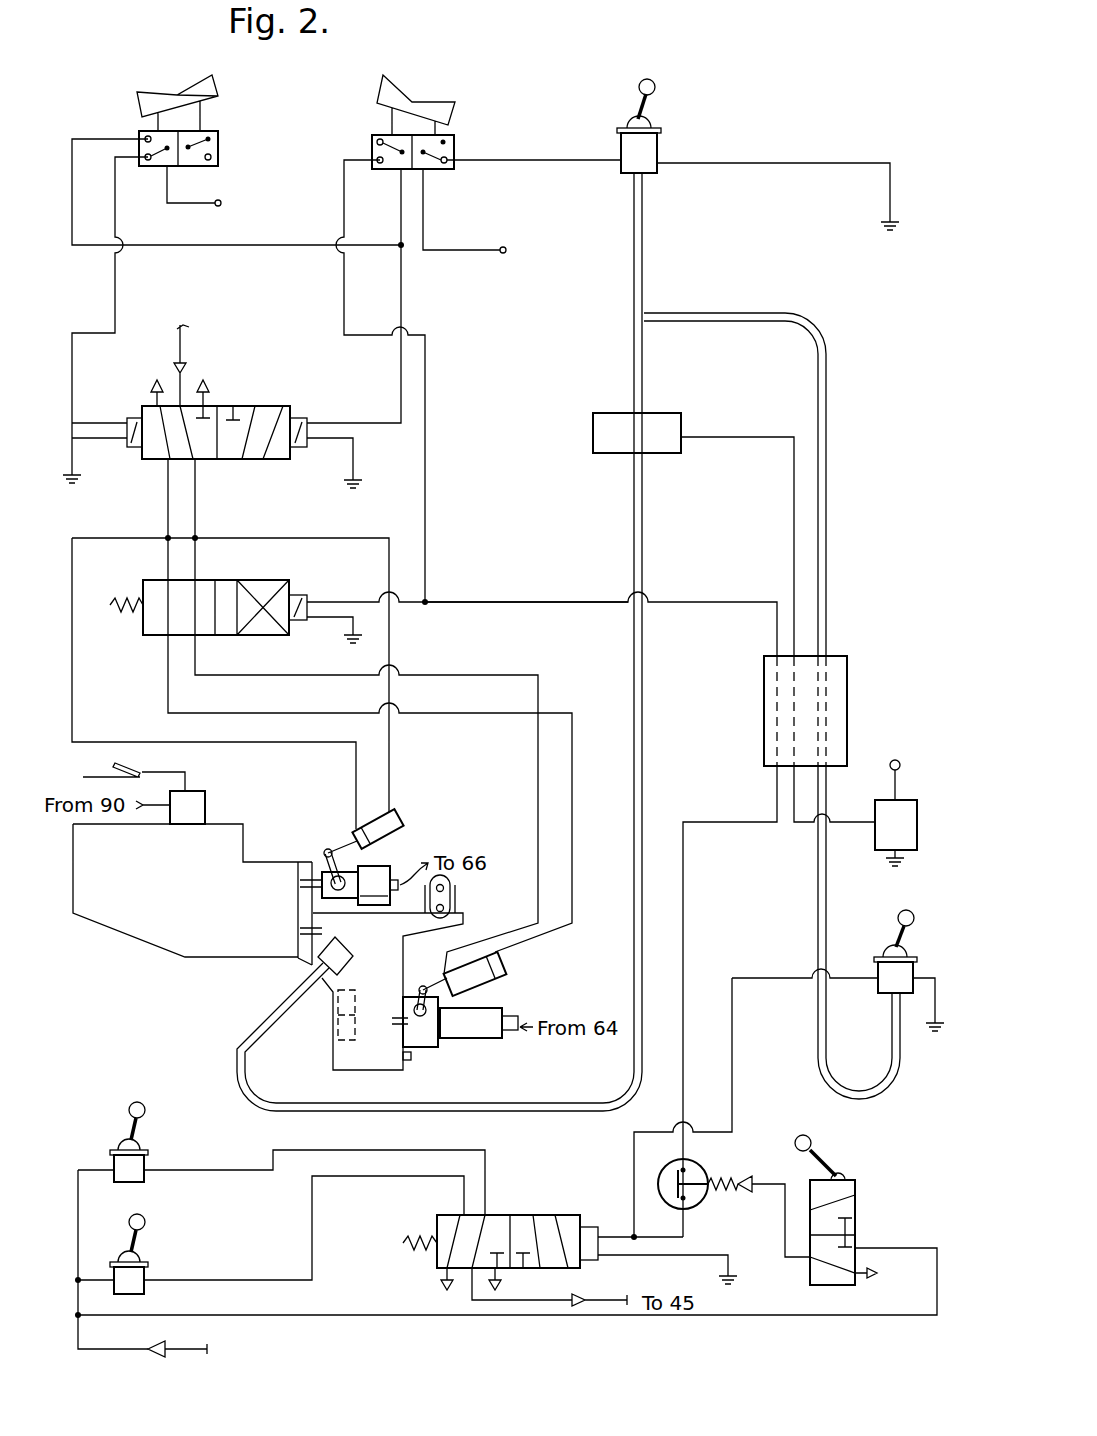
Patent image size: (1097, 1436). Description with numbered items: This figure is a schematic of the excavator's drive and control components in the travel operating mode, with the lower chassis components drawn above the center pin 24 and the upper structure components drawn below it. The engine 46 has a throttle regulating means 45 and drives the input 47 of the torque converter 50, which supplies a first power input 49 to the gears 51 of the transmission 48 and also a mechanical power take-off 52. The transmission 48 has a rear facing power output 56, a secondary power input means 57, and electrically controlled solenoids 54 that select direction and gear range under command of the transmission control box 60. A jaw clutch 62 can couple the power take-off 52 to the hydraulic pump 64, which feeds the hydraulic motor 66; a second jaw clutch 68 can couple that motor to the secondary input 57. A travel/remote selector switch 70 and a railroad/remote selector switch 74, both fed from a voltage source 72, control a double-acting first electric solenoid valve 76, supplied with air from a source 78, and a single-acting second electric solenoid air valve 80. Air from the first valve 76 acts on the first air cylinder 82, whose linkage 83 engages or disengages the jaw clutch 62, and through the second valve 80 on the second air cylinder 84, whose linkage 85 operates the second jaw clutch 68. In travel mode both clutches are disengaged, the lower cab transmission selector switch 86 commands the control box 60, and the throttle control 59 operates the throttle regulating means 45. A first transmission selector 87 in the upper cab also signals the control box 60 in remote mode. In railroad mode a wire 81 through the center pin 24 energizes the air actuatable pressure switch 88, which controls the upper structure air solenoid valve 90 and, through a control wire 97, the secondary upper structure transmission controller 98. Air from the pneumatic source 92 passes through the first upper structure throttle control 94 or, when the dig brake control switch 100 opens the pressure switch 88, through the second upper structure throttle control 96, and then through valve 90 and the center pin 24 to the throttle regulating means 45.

The center pin 24 is at (765, 700).
The throttle regulating means 45 is at (195, 811).
The engine 46 is at (172, 923).
The input to torque converter 47 is at (293, 931).
The transmission 48 is at (348, 1060).
The first power input 49 is at (318, 930).
The torque converter 50 is at (307, 956).
The gears of transmission 51 is at (332, 1027).
The power take-off 52 is at (308, 883).
The transmission solenoids 54 is at (343, 958).
The power output 56 is at (408, 1053).
The secondary power input means 57 is at (403, 1013).
The throttle control 59 is at (136, 758).
The transmission control box 60 is at (593, 425).
The jaw clutch 62 is at (352, 868).
The hydraulic pump 64 is at (378, 885).
The hydraulic motor 66 is at (470, 1032).
The second jaw clutch 68 is at (430, 1035).
The travel/remote selector switch 70 is at (208, 99).
The source 72 is at (222, 204).
The railroad/remote selector switch 74 is at (448, 113).
The first electric solenoid valve 76 is at (265, 405).
The source of supply air 78 is at (182, 352).
The second electric solenoid air valve 80 is at (288, 580).
The wire 81 is at (532, 602).
The first air cylinder 82 is at (398, 822).
The linkage 83 is at (321, 857).
The second air cylinder 84 is at (504, 962).
The linkage 85 is at (422, 988).
The transmission selector switch 86 is at (645, 150).
The first transmission selector 87 is at (908, 802).
The air actuatable pressure switch 88 is at (697, 1200).
The upper structure air solenoid valve 90 is at (438, 1260).
The pneumatic source 92 is at (162, 1348).
The first upper structure throttle control 94 is at (140, 1258).
The second upper structure throttle control 96 is at (140, 1143).
The control wire 97 is at (733, 1067).
The secondary upper structure transmission controller 98 is at (883, 952).
The dig brake control switch 100 is at (836, 1178).